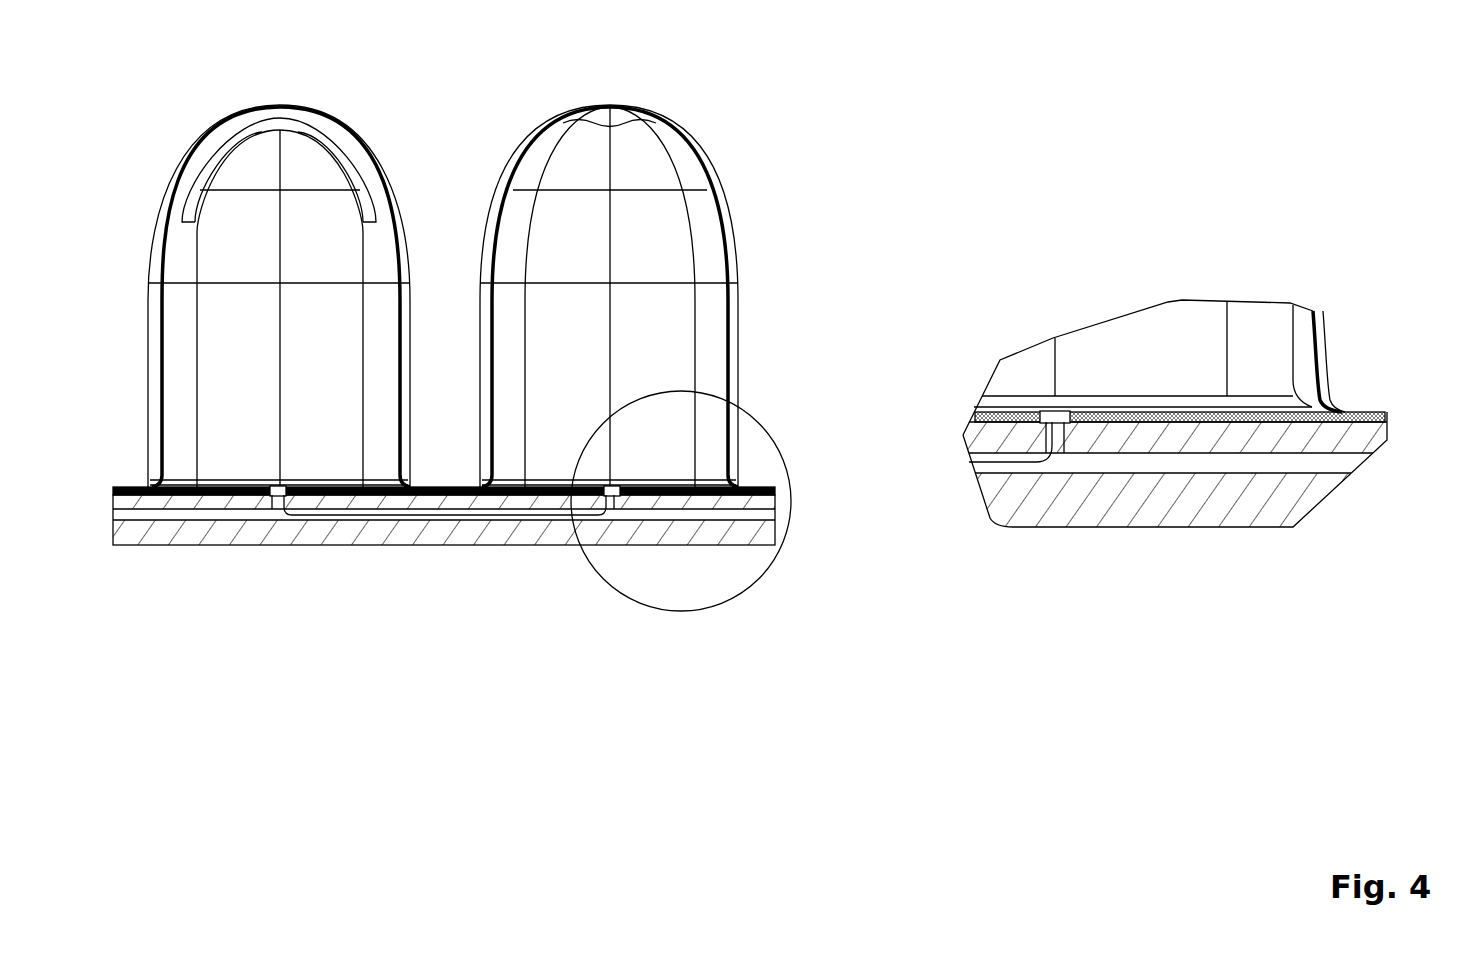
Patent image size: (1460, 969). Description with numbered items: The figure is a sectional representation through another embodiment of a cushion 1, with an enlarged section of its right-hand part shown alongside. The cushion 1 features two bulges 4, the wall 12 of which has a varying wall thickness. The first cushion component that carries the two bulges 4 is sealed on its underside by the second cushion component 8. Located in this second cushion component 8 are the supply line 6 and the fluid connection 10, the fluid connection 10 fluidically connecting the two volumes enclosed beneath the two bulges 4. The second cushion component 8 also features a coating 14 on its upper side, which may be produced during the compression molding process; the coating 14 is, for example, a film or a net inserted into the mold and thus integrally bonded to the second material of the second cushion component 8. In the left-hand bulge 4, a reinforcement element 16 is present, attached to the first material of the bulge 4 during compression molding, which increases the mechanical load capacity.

The cushion 1 is at (624, 78).
The bulge 4 is at (341, 128).
The supply line 6 is at (712, 512).
The second cushion component 8 is at (238, 520).
The fluid connection 10 is at (437, 515).
The wall 12 is at (158, 223).
The coating 14 is at (190, 488).
The reinforcement element 16 is at (237, 130).